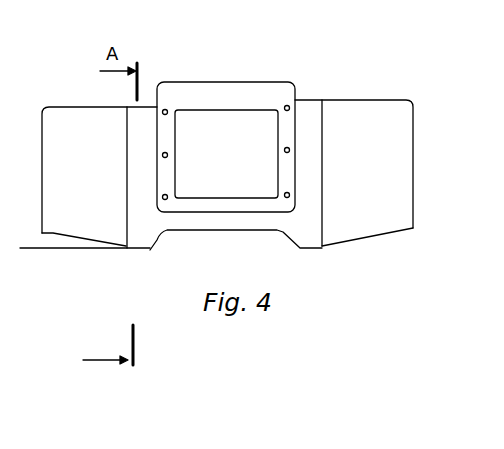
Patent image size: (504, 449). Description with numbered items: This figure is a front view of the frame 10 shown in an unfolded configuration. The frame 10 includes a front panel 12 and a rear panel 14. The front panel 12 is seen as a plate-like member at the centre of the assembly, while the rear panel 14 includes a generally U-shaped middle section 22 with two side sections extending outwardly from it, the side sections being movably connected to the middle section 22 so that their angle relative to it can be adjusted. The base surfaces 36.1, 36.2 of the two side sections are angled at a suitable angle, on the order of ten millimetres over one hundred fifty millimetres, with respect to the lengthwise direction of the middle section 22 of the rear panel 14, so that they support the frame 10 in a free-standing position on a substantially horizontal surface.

The frame 10 is at (213, 60).
The front panel 12 is at (260, 97).
The rear panel 14 is at (86, 97).
The middle section 22 is at (148, 222).
The base surface 36.1 is at (60, 242).
The base surface 36.2 is at (367, 244).